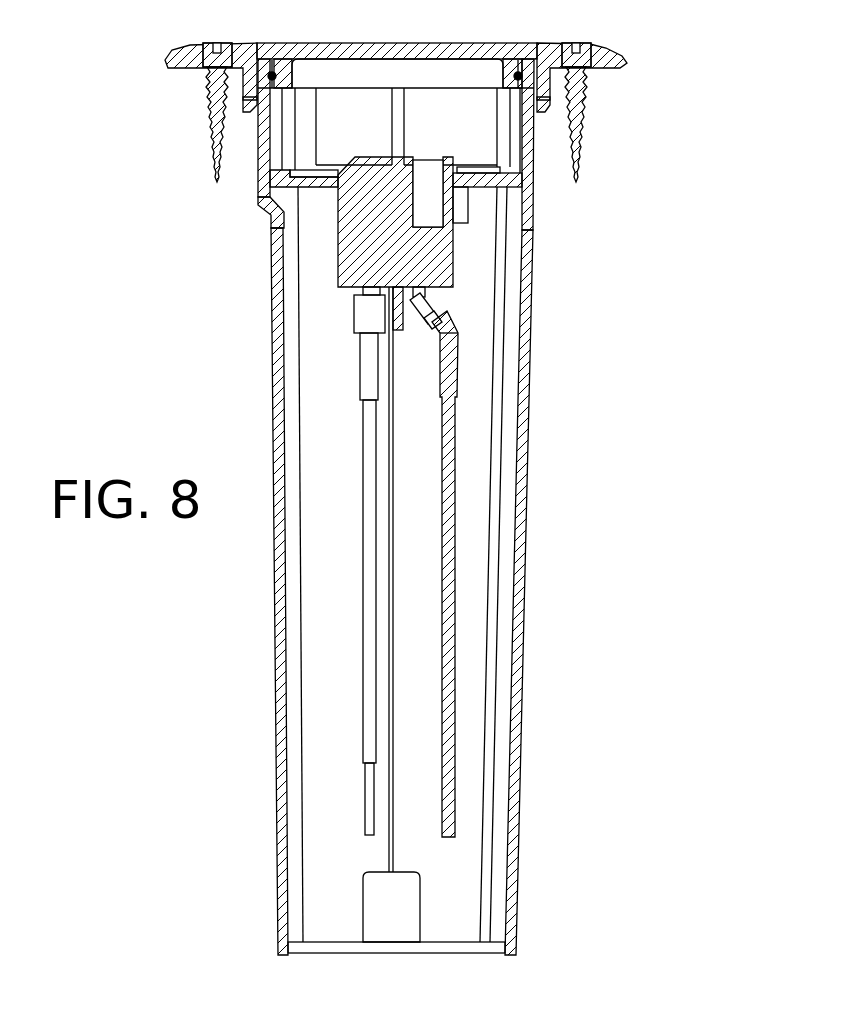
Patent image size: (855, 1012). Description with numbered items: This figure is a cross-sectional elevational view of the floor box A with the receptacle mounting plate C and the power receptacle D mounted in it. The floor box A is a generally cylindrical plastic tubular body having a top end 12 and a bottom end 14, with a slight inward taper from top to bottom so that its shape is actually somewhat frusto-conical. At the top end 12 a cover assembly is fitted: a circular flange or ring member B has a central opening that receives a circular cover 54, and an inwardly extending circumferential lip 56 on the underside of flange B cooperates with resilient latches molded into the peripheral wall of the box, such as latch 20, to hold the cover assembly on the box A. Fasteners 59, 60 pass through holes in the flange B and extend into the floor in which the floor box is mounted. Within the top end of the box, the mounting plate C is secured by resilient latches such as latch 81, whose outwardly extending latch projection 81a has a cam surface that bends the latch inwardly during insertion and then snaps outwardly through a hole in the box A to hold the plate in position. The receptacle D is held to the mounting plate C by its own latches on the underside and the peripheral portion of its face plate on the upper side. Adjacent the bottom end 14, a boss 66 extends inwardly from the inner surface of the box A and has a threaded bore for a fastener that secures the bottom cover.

The top end 12 is at (382, 88).
The circular cover 54 is at (460, 43).
The flange B is at (628, 52).
The fastener 59 is at (208, 143).
The fastener 60 is at (587, 153).
The circumferential lip 56 is at (530, 108).
The resilient latch 20 is at (535, 130).
The mounting plate C is at (483, 205).
The receptacle D is at (456, 272).
The latch projection 81a is at (262, 199).
The resilient latch 81 is at (268, 212).
The floor box A is at (538, 468).
The boss 66 is at (393, 925).
The bottom end 14 is at (508, 953).